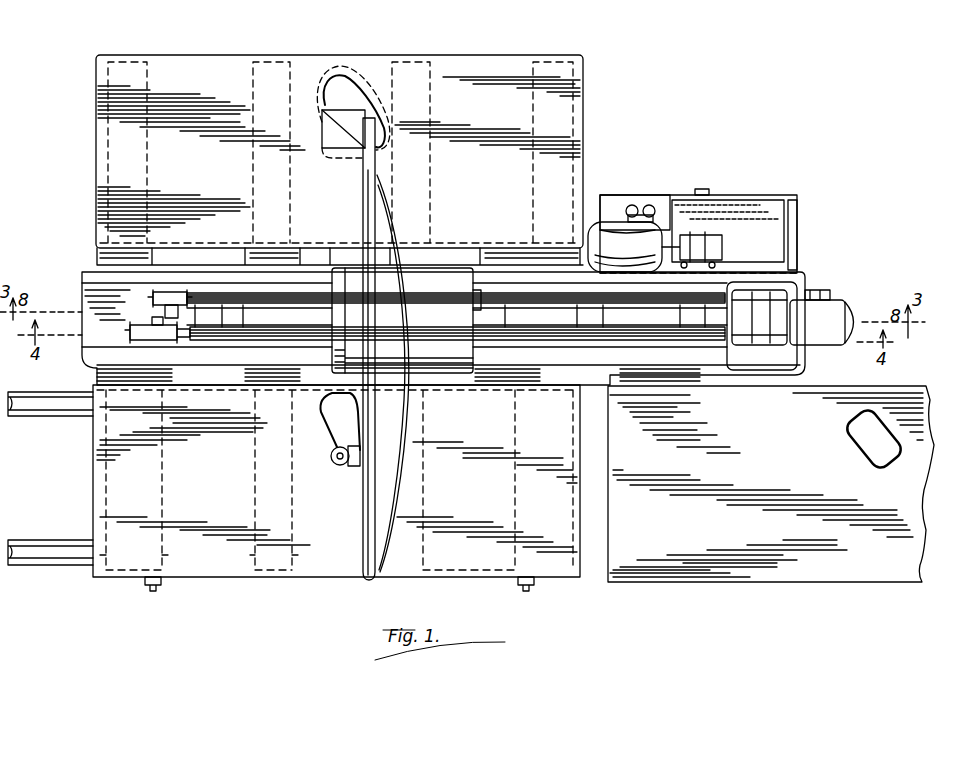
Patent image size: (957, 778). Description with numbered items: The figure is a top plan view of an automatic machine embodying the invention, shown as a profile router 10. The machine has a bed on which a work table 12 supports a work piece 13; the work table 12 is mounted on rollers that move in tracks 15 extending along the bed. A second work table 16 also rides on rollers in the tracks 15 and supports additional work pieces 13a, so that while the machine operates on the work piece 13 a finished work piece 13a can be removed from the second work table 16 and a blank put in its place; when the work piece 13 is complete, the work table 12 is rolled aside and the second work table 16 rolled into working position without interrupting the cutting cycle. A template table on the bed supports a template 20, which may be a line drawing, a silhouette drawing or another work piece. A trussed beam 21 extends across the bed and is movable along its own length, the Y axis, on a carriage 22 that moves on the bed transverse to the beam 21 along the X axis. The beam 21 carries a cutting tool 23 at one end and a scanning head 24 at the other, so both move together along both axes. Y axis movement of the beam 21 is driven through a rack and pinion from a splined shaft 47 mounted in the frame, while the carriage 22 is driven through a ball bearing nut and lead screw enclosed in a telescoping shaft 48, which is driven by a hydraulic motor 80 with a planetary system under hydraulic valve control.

The profile router 10 is at (680, 150).
The work table 12 is at (333, 565).
The work piece 13 is at (334, 440).
The additional work piece 13a is at (860, 431).
The tracks 15 is at (55, 538).
The second work table 16 is at (700, 572).
The template 20 is at (350, 82).
The trussed beam 21 is at (362, 512).
The carriage 22 is at (432, 328).
The cutting tool 23 is at (343, 478).
The scanning head 24 is at (338, 165).
The splined shaft 47 is at (568, 300).
The telescoping shaft 48 is at (662, 338).
The hydraulic motor 80 is at (768, 338).